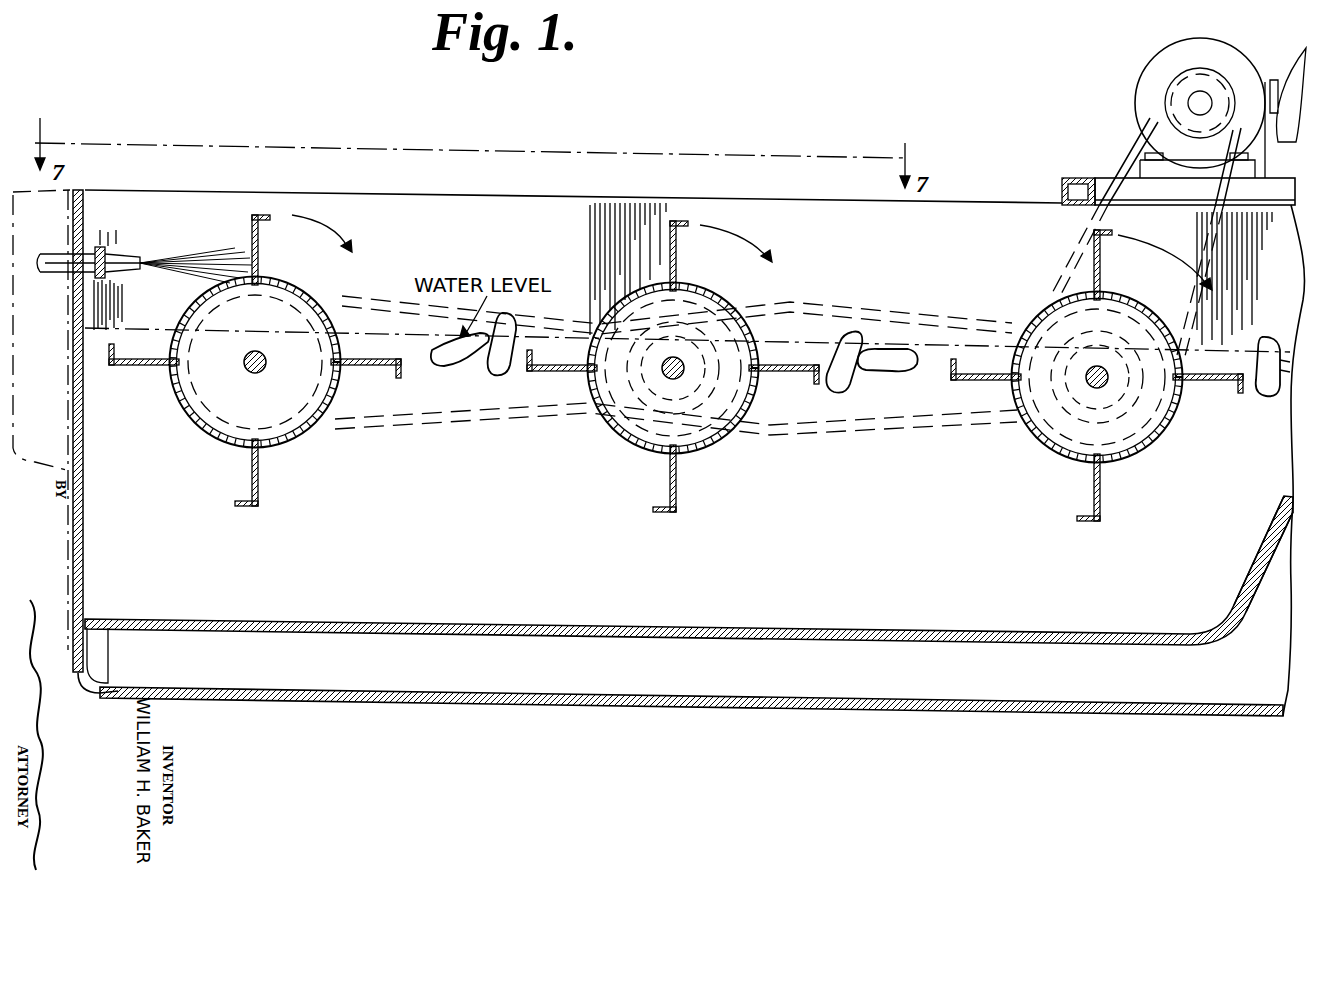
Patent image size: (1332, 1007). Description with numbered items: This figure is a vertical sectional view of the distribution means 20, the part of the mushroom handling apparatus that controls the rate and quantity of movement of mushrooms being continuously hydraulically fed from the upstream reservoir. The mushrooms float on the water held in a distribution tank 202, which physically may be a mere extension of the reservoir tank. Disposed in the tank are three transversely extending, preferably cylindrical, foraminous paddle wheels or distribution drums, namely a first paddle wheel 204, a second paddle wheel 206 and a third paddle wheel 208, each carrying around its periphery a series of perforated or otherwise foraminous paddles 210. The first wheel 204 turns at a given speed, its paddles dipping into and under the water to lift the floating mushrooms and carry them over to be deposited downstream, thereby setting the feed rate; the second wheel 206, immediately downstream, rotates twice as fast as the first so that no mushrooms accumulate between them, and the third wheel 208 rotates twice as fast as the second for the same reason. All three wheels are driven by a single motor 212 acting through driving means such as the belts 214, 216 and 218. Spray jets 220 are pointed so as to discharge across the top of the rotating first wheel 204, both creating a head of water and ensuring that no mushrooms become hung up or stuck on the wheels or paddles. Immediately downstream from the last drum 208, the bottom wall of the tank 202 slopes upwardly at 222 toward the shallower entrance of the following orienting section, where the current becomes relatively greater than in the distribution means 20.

The distribution means 20 is at (430, 722).
The distribution tank 202 is at (503, 620).
The first paddle wheel 204 is at (212, 440).
The second paddle wheel 206 is at (648, 456).
The third paddle wheel 208 is at (1055, 465).
The paddles 210 is at (260, 251).
The motor 212 is at (1147, 80).
The belt 214 is at (1121, 158).
The belt 216 is at (886, 322).
The belt 218 is at (352, 300).
The spray jets 220 is at (105, 254).
The upwardly sloping bottom wall portion 222 is at (1266, 542).